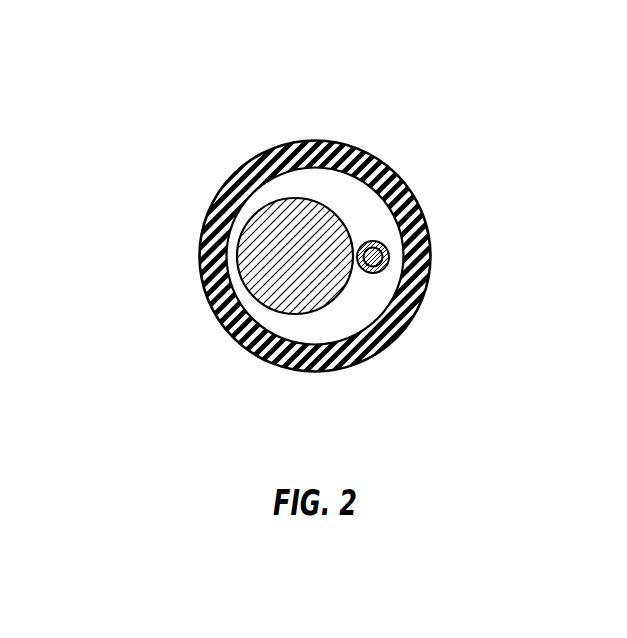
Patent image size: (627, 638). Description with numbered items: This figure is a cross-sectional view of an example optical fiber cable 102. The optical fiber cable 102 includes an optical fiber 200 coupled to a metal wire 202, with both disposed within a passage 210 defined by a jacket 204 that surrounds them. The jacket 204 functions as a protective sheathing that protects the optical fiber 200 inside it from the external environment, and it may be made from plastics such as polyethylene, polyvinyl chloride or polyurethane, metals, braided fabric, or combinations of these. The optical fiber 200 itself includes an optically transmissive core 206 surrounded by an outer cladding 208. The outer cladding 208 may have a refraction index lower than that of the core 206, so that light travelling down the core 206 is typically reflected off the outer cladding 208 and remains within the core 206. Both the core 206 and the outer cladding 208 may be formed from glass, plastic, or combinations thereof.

The optical fiber cable 102 is at (264, 92).
The optical fiber 200 is at (416, 208).
The metal wire 202 is at (293, 315).
The jacket 204 is at (392, 240).
The core 206 is at (373, 257).
The outer cladding 208 is at (426, 302).
The passage 210 is at (325, 183).